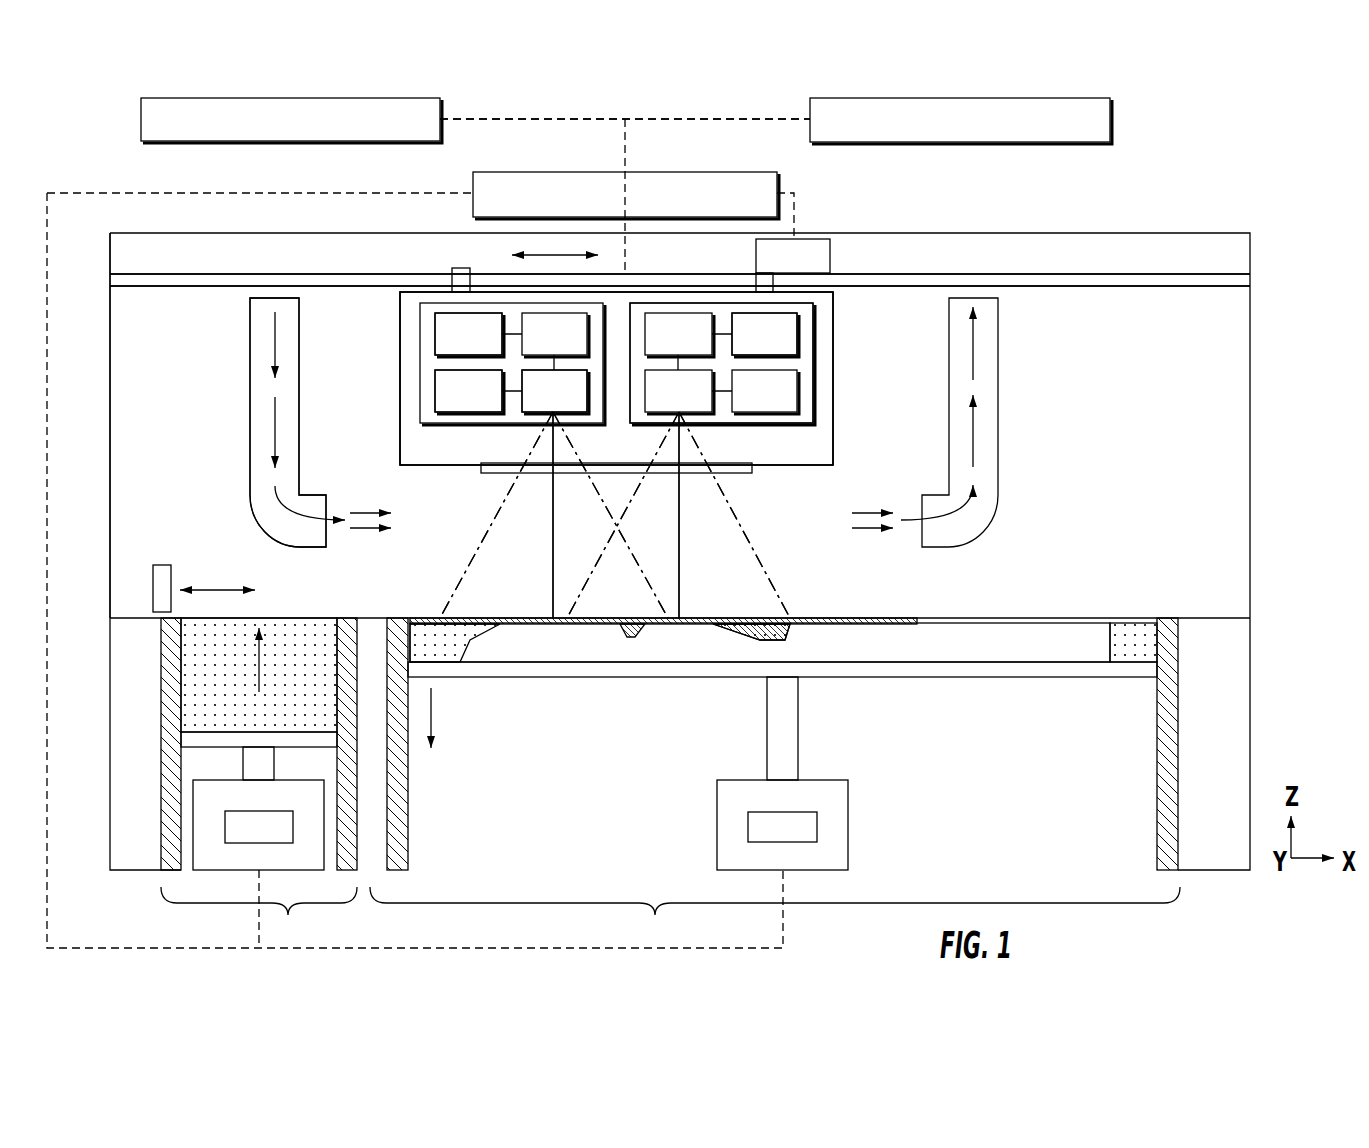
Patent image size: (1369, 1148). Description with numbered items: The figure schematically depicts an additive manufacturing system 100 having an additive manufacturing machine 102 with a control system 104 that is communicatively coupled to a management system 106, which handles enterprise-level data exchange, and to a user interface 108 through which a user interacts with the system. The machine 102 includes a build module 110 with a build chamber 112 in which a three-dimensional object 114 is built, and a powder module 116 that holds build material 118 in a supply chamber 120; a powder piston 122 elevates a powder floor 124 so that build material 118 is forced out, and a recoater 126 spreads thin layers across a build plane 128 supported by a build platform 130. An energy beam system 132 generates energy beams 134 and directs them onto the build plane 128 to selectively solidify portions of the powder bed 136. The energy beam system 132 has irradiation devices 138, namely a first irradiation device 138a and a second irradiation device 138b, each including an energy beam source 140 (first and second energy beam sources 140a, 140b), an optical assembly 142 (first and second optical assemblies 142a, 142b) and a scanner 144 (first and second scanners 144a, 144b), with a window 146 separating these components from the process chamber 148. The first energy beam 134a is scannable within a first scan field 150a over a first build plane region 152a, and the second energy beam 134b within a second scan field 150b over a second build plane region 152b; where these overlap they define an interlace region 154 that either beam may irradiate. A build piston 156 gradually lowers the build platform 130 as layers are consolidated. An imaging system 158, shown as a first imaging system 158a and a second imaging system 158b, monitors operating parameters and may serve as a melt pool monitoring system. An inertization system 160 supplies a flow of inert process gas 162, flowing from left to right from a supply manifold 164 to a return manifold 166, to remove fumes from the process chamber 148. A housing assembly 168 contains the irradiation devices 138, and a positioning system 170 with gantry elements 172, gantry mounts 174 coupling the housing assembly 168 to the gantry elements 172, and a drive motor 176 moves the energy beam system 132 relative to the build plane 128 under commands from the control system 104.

The additive manufacturing system 100 is at (722, 100).
The additive manufacturing machine 102 is at (885, 215).
The control system 104 is at (716, 172).
The management system 106 is at (1050, 97).
The user interface 108 is at (211, 97).
The build module 110 is at (775, 780).
The build chamber 112 is at (420, 640).
The three-dimensional object 114 is at (549, 650).
The powder module 116 is at (259, 780).
The build material 118 is at (300, 616).
The supply chamber 120 is at (236, 673).
The powder piston 122 is at (274, 762).
The powder floor 124 is at (265, 730).
The recoater 126 is at (160, 565).
The build plane 128 is at (610, 618).
The build platform 130 is at (820, 680).
The energy beam system 132 is at (400, 398).
The energy beams 134 is at (584, 512).
The first energy beam 134a is at (553, 493).
The second energy beam 134b is at (682, 482).
The powder bed 136 is at (880, 616).
The irradiation devices 138 is at (400, 312).
The first irradiation device 138a is at (400, 340).
The second irradiation device 138b is at (833, 347).
The energy beam source 140 is at (505, 310).
The first energy beam source 140a is at (492, 349).
The second energy beam source 140b is at (702, 349).
The optical assembly 142 is at (808, 305).
The first optical assembly 142a is at (578, 349).
The second optical assembly 142b is at (788, 349).
The scanner 144 is at (540, 418).
The first scanner 144a is at (578, 406).
The second scanner 144b is at (702, 406).
The window 146 is at (735, 463).
The process chamber 148 is at (110, 407).
The first scan field 150a is at (498, 511).
The second scan field 150b is at (739, 509).
The first build plane region 152a is at (493, 580).
The second build plane region 152b is at (743, 580).
The interlace region 154 is at (628, 592).
The build piston 156 is at (767, 750).
The imaging system 158 is at (472, 418).
The first imaging system 158a is at (492, 406).
The second imaging system 158b is at (788, 406).
The inertization system 160 is at (232, 470).
The inert process gas 162 is at (272, 335).
The supply manifold 164 is at (250, 440).
The return manifold 166 is at (1000, 445).
The housing assembly 168 is at (833, 392).
The positioning system 170 is at (858, 295).
The gantry elements 172 is at (950, 273).
The gantry mounts 174 is at (452, 278).
The drive motor 176 is at (810, 269).